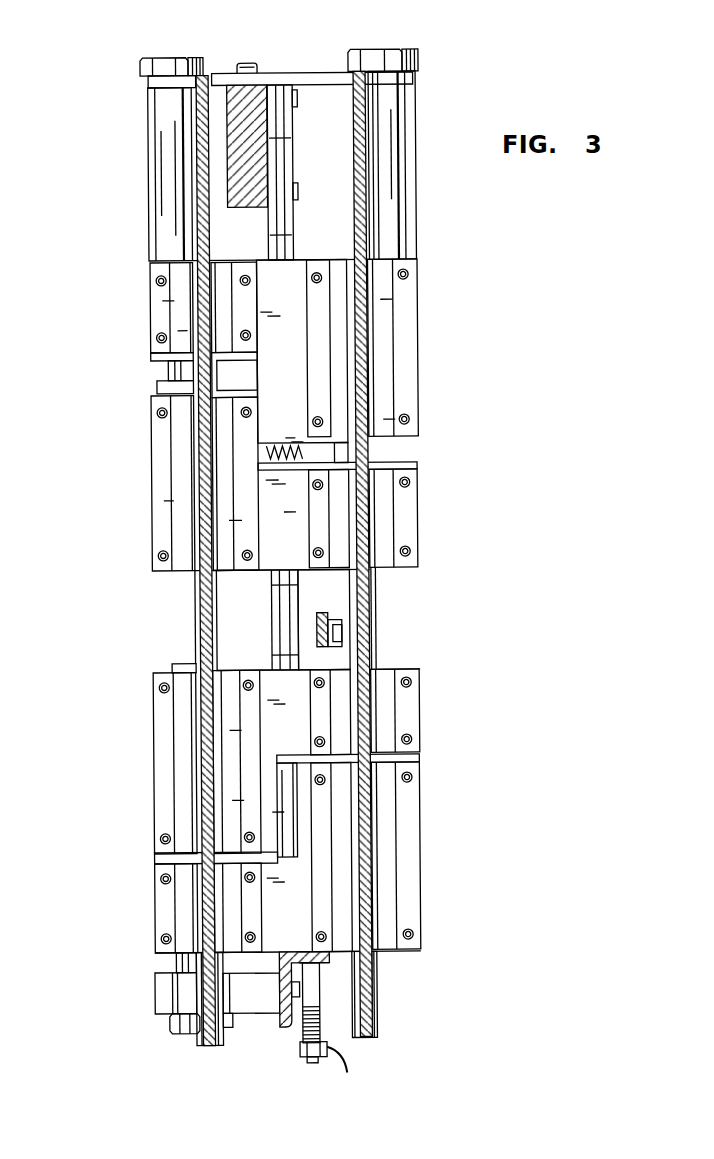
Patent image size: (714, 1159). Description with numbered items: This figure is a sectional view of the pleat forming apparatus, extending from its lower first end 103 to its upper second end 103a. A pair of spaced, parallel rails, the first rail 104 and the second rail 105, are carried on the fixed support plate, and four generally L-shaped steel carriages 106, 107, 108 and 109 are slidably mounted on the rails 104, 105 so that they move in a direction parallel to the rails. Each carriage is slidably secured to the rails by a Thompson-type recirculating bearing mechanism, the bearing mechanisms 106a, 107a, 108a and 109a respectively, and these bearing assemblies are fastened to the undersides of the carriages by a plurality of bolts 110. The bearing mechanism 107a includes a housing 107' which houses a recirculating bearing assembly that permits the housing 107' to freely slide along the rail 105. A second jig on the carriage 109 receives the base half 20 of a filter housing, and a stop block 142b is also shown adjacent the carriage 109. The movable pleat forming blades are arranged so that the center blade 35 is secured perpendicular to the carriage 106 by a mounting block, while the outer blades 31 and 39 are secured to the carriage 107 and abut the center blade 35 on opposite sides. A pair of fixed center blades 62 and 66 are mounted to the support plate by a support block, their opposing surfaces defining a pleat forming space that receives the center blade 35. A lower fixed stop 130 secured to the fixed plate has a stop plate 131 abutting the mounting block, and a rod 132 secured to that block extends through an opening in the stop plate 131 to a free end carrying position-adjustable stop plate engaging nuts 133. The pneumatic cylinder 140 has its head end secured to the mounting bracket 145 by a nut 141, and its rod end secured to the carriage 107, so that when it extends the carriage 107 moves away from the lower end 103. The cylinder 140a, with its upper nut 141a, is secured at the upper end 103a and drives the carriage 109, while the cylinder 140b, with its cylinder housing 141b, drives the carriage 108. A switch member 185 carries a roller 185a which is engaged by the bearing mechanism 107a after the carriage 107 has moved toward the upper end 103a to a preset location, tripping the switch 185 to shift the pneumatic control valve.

The lower first end 103 is at (229, 1063).
The upper second end 103a is at (296, 57).
The first rail 104 is at (377, 187).
The second rail 105 is at (196, 210).
The cylinder 140a is at (416, 133).
The cylinder 140b is at (149, 172).
The right upper nut 141a is at (401, 108).
The cylinder housing 141b is at (149, 130).
The center blade 66 is at (271, 208).
The center blade 62 is at (286, 213).
The bearing mechanism 109a is at (170, 314).
The carriage 109 is at (145, 362).
The stop block 142b is at (165, 370).
The carriage 108 is at (414, 461).
The bearing mechanism 108a is at (168, 519).
The base half 20 is at (284, 452).
The outer blade 31 is at (286, 592).
The center blade 35 is at (278, 612).
The outer blade 39 is at (267, 637).
The switch member 185 is at (322, 620).
The roller 185a is at (337, 630).
The housing 107' is at (289, 661).
The bolts 110 is at (163, 687).
The bearing mechanism 107a is at (166, 772).
The carriage 106 is at (416, 763).
The bearing mechanism 106a is at (165, 920).
The carriage 107 is at (175, 860).
The pneumatic cylinder 140 is at (168, 965).
The lower nut 141 is at (178, 967).
The mounting bracket 145 is at (157, 1003).
The lower fixed stop 130 is at (274, 1022).
The stop plate 131 is at (298, 950).
The rod 132 is at (302, 1063).
The stop plate engaging nuts 133 is at (348, 1071).